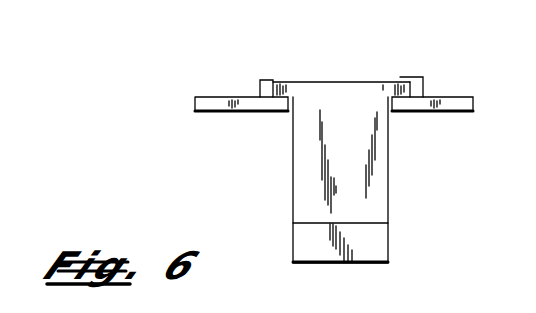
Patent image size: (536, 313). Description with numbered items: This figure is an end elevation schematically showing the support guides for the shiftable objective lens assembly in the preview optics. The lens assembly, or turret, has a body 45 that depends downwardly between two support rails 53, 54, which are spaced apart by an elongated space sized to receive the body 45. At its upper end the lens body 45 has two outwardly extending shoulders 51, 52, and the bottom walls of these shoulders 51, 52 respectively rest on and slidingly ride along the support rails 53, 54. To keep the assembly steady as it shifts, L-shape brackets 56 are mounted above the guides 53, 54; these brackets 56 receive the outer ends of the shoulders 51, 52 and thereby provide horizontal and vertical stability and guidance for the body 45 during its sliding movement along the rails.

The body 45 is at (389, 181).
The shoulder 51 is at (288, 83).
The shoulder 52 is at (400, 88).
The support rail 53 is at (274, 108).
The support rail 54 is at (405, 108).
The L-shape bracket 56 is at (259, 90).